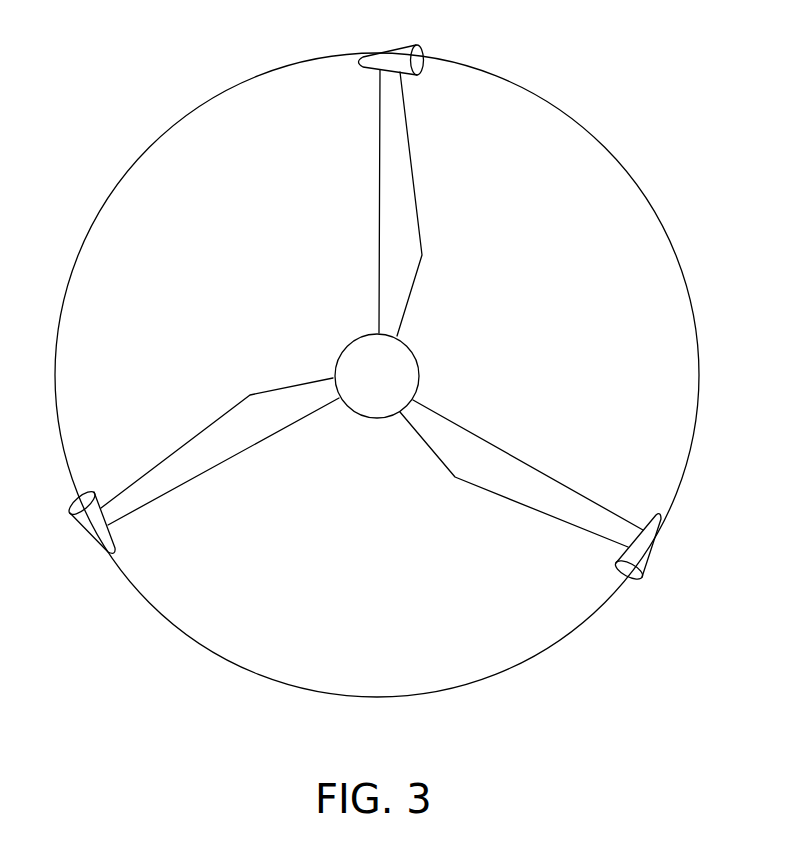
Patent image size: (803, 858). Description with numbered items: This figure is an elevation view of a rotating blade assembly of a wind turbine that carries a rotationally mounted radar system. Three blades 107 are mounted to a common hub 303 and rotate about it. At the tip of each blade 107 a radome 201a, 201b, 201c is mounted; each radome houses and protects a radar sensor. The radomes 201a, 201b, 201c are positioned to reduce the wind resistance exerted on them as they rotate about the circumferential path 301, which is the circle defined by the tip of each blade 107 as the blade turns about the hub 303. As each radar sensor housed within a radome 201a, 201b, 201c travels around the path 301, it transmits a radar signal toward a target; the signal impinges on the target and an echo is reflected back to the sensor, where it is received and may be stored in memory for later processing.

The blade 107 is at (379, 153).
The radome 201a is at (391, 44).
The radome 201b is at (654, 552).
The radome 201c is at (83, 530).
The circumferential path 301 is at (377, 378).
The hub 303 is at (407, 373).